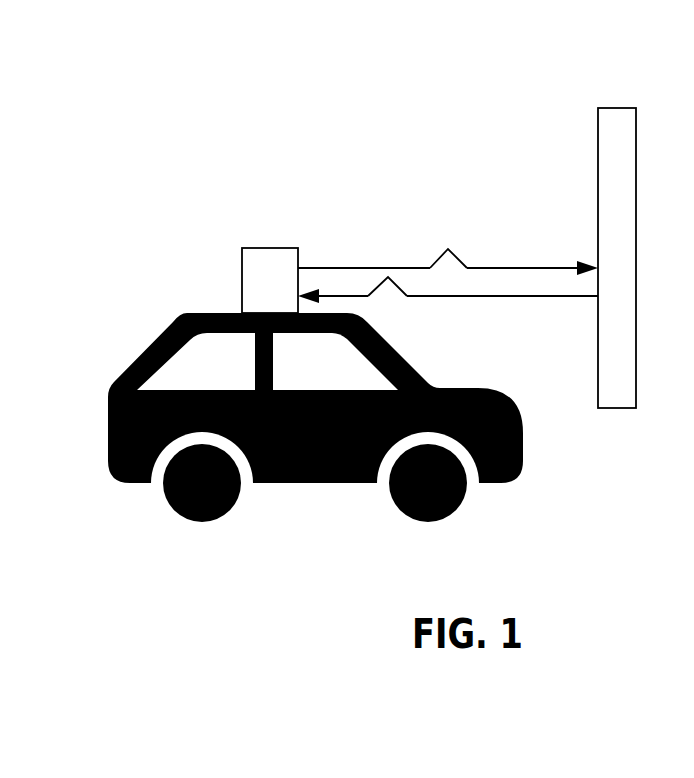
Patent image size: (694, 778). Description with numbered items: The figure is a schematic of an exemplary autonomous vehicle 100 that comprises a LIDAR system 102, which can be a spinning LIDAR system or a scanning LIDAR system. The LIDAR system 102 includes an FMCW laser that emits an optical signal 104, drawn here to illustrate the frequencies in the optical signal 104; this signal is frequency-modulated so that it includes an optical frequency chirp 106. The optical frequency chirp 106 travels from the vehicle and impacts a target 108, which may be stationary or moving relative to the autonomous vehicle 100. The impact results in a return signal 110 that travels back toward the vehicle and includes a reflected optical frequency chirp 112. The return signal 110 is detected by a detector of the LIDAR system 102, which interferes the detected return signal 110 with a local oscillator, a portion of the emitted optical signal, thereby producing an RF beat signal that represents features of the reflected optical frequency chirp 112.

The autonomous vehicle 100 is at (205, 183).
The LIDAR system 102 is at (280, 248).
The optical signal 104 is at (448, 233).
The optical frequency chirp 106 is at (442, 232).
The target 108 is at (617, 108).
The return signal 110 is at (448, 310).
The reflected optical frequency chirp 112 is at (383, 297).